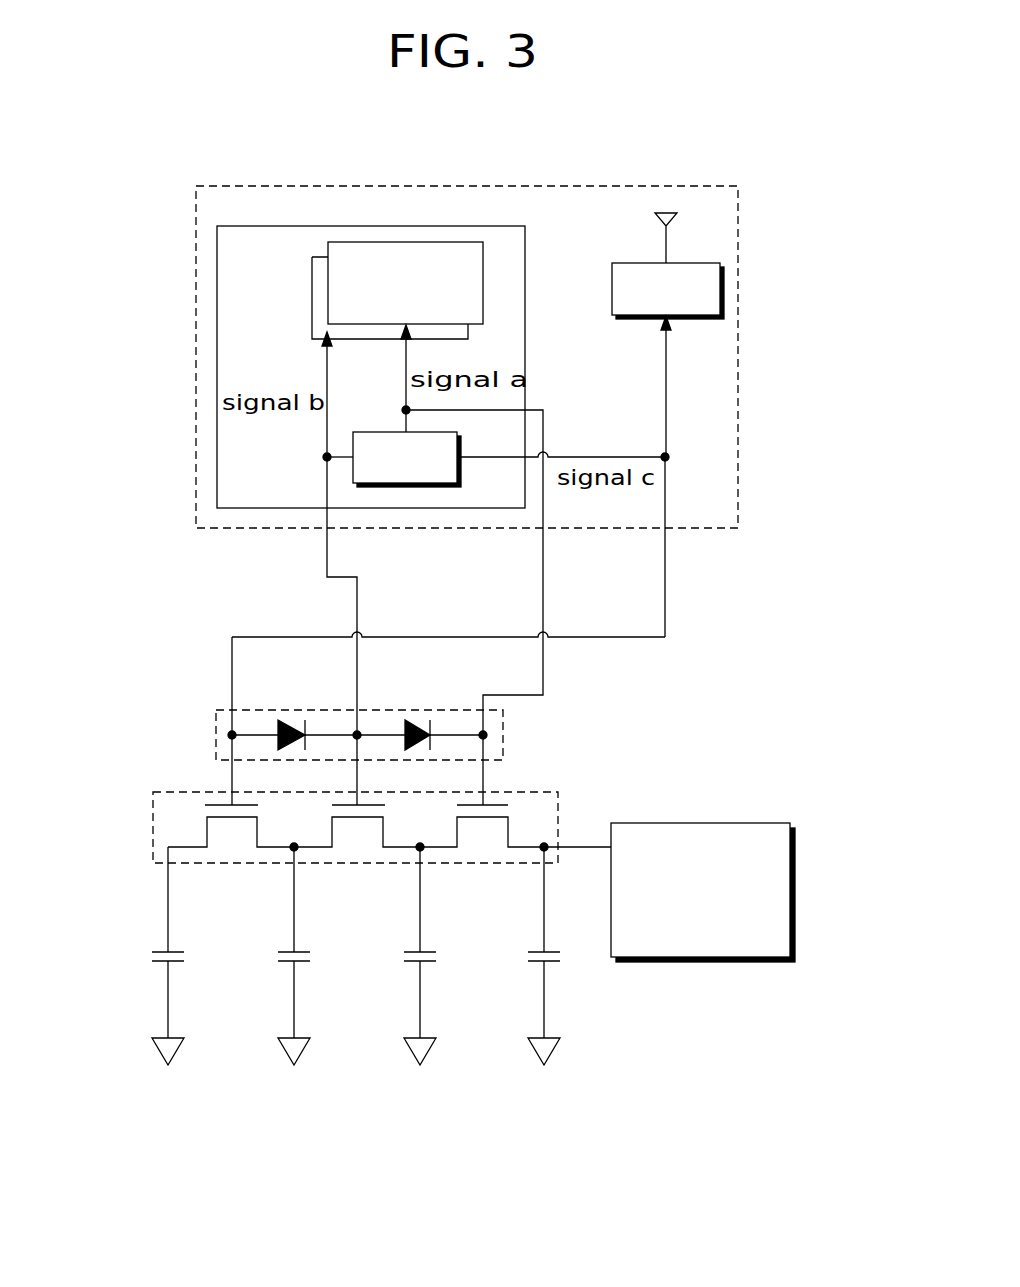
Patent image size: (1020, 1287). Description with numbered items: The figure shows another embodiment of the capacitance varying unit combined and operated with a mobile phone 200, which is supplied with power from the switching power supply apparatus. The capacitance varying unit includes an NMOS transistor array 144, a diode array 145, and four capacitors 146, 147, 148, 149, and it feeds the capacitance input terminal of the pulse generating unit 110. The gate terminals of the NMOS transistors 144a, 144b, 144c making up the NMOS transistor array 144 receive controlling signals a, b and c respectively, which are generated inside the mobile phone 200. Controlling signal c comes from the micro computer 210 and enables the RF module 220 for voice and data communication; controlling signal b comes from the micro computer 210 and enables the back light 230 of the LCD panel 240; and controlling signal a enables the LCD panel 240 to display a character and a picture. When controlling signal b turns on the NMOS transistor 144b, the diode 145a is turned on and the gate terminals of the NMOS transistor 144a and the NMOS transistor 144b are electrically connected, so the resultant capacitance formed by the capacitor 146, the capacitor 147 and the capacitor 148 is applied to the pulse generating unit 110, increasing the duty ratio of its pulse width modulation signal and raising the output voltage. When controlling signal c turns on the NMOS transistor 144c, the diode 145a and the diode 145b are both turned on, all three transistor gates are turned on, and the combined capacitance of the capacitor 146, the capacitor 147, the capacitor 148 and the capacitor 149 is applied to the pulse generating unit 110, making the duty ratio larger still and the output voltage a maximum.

The pulse generating unit 110 is at (712, 960).
The NMOS transistor array 144 is at (452, 838).
The NMOS transistor 144a is at (483, 832).
The NMOS transistor 144b is at (357, 832).
The NMOS transistor 144c is at (232, 832).
The diode array 145 is at (270, 710).
The diode 145a is at (420, 721).
The diode 145b is at (296, 721).
The capacitor 146 is at (528, 958).
The capacitor 147 is at (404, 958).
The capacitor 148 is at (278, 958).
The capacitor 149 is at (152, 958).
The mobile phone 200 is at (196, 428).
The micro computer 210 is at (430, 487).
The RF module 220 is at (722, 290).
The back light 230 is at (312, 290).
The LCD panel 240 is at (525, 262).